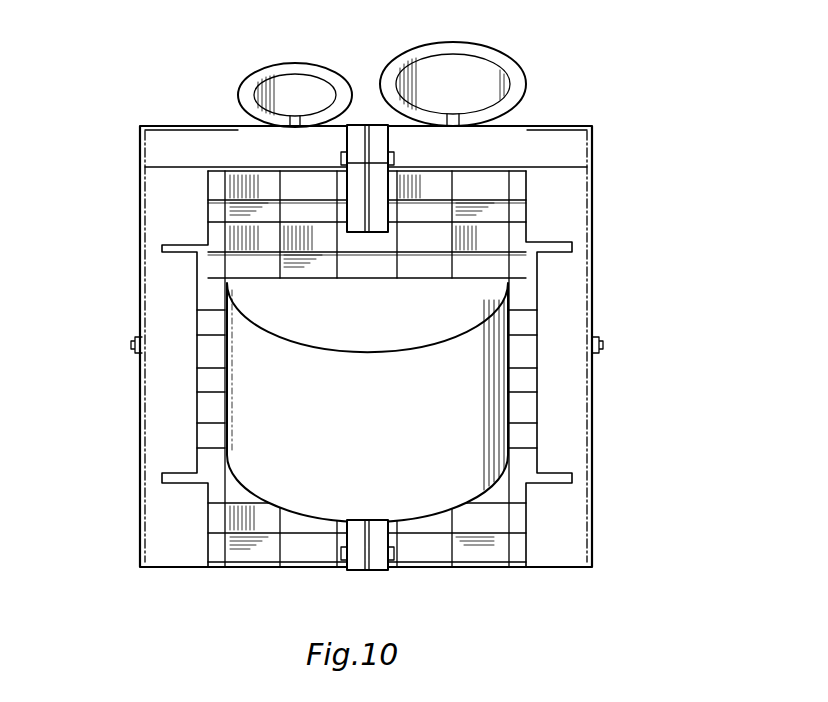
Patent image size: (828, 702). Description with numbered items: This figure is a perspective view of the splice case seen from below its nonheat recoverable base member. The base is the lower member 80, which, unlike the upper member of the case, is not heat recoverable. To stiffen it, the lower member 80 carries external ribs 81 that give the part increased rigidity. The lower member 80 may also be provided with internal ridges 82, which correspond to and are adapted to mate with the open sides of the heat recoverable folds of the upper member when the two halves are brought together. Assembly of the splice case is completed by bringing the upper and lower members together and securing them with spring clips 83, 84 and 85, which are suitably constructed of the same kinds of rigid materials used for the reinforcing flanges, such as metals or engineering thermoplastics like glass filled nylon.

The lower member 80 is at (313, 502).
The external ribs 81 is at (517, 218).
The internal ridges 82 is at (290, 112).
The spring clip 83 is at (577, 265).
The spring clip 84 is at (355, 128).
The spring clip 85 is at (140, 208).